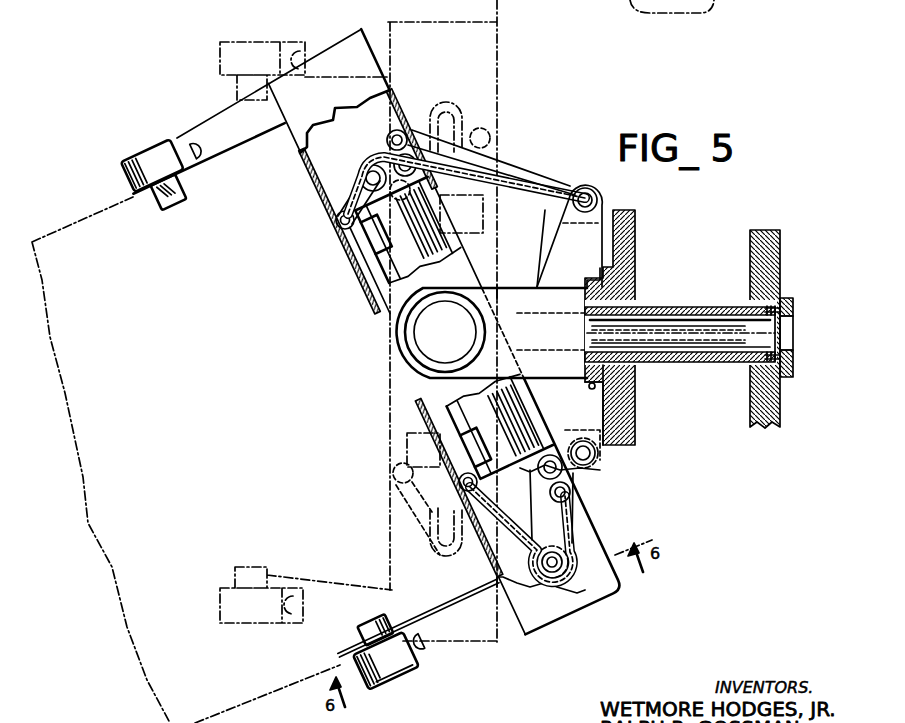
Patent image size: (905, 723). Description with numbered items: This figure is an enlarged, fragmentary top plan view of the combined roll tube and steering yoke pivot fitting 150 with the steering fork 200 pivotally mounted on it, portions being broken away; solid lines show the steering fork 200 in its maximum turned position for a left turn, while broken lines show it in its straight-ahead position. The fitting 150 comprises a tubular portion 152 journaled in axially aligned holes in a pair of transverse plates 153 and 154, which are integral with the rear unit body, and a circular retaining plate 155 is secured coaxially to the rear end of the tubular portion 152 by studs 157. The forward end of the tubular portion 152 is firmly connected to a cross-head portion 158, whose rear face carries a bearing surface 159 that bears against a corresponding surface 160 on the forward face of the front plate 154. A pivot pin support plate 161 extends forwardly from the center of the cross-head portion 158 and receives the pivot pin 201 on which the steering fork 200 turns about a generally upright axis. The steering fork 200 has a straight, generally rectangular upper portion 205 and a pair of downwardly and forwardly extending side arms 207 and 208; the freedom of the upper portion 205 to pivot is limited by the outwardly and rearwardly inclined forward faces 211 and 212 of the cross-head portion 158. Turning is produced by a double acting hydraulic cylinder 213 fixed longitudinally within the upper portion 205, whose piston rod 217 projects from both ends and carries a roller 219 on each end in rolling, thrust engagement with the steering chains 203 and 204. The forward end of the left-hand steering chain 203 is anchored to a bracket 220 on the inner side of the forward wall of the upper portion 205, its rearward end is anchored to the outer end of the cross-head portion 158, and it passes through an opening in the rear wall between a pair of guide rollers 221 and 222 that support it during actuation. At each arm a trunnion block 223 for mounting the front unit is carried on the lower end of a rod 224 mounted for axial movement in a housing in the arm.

The roll tube and steering yoke pivot fitting 150 is at (553, 222).
The tubular portion 152 is at (673, 307).
The transverse plate 153 is at (770, 270).
The front plate 154 is at (637, 403).
The circular retaining plate 155 is at (793, 325).
The studs 157 is at (793, 355).
The cross-head portion 158 is at (560, 255).
The bearing surface 159 is at (597, 287).
The bearing surface 160 is at (596, 388).
The pivot pin support plate 161 is at (503, 293).
The steering fork 200 is at (297, 98).
The pivot pin 201 is at (432, 335).
The steering chain 203 is at (590, 515).
The steering chain 204 is at (349, 200).
The upper portion 205 is at (335, 218).
The side arm 207 is at (507, 628).
The side arm 208 is at (250, 122).
The forward face 211 is at (538, 382).
The forward face 212 is at (556, 234).
The double acting hydraulic cylinder 213 is at (463, 412).
The piston rod 217 is at (350, 238).
The roller 219 is at (358, 160).
The bracket 220 is at (410, 478).
The guide roller 221 is at (571, 477).
The guide roller 222 is at (580, 441).
The trunnion block 223 is at (169, 172).
The rod 224 is at (196, 146).